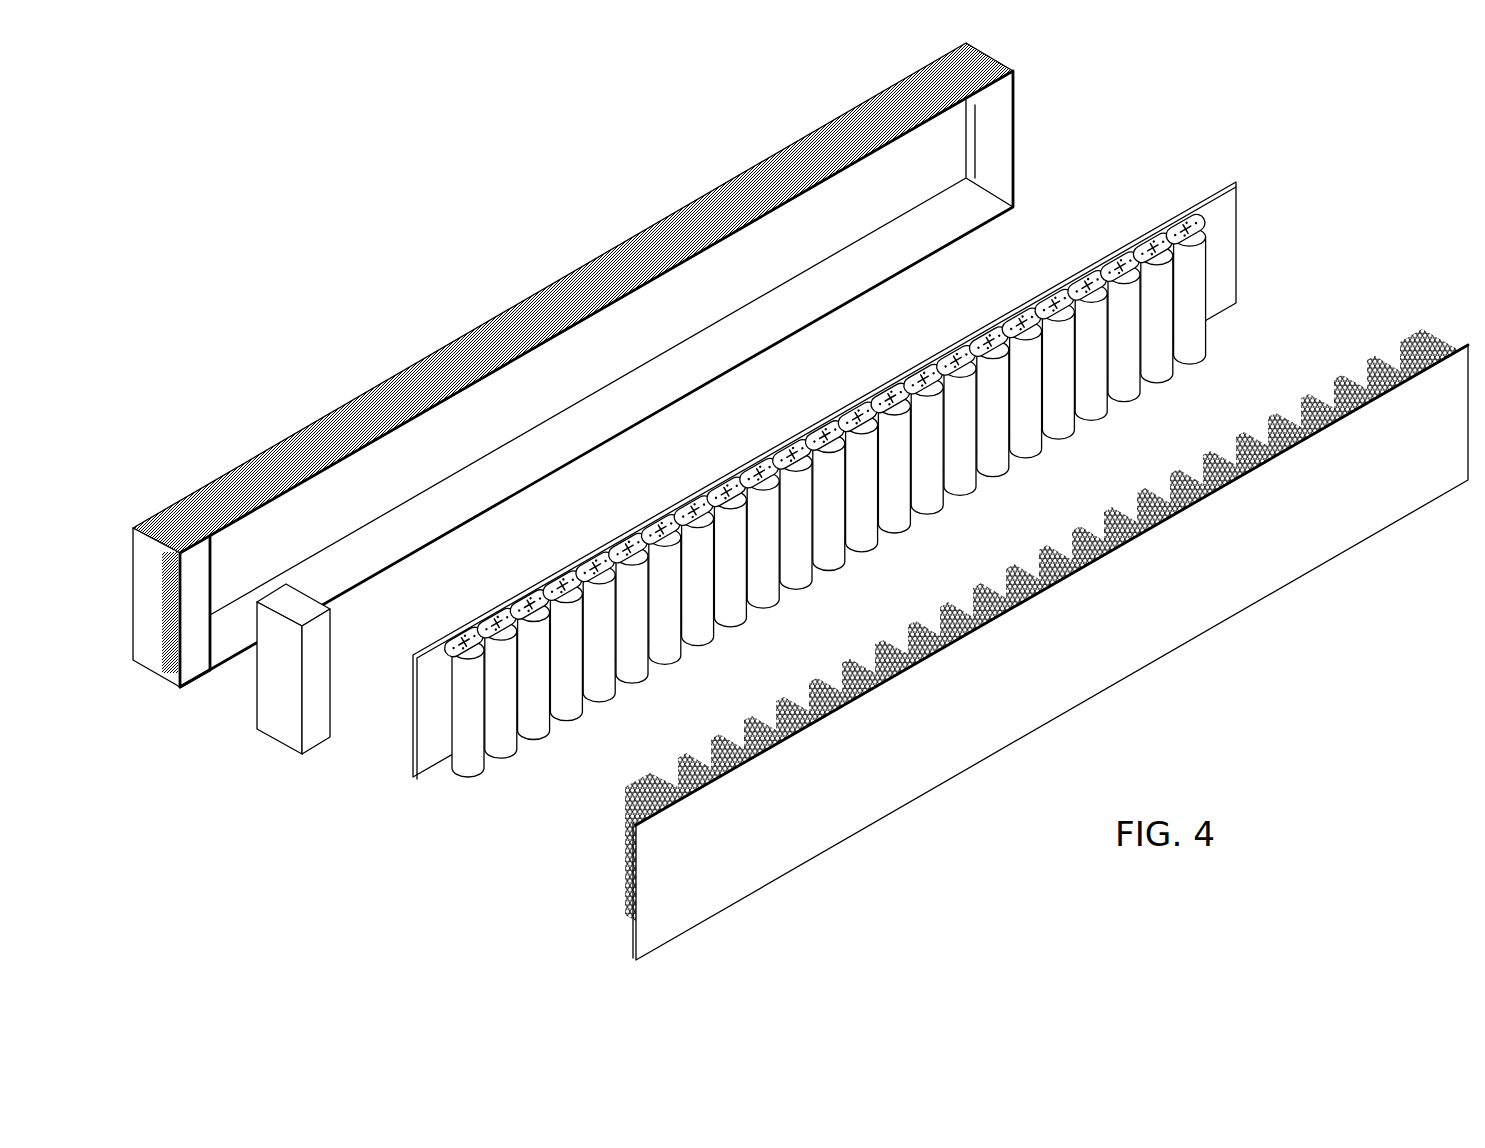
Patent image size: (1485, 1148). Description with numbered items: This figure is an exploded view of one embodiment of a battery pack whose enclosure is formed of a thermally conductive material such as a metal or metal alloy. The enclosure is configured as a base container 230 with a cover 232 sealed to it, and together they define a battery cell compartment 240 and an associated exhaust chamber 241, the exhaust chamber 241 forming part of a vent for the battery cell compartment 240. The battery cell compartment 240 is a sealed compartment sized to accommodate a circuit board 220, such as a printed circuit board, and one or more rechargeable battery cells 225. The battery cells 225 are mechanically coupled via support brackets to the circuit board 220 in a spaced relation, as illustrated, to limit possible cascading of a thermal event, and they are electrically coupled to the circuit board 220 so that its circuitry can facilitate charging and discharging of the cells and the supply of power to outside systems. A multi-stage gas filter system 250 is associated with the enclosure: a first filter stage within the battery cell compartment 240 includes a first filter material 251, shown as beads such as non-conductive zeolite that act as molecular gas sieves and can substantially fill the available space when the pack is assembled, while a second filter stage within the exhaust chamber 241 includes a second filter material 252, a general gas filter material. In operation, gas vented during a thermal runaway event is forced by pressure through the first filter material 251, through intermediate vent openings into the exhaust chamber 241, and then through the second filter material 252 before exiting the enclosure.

The circuit board 220 is at (1227, 213).
The rechargeable battery cells 225 is at (1155, 370).
The base container 230 is at (142, 580).
The cover 232 is at (685, 898).
The battery cell compartment 240 is at (557, 409).
The exhaust chamber 241 is at (186, 658).
The multi-stage gas filter system 250 is at (835, 570).
The first filter material 251 is at (742, 740).
The second filter material 252 is at (297, 733).